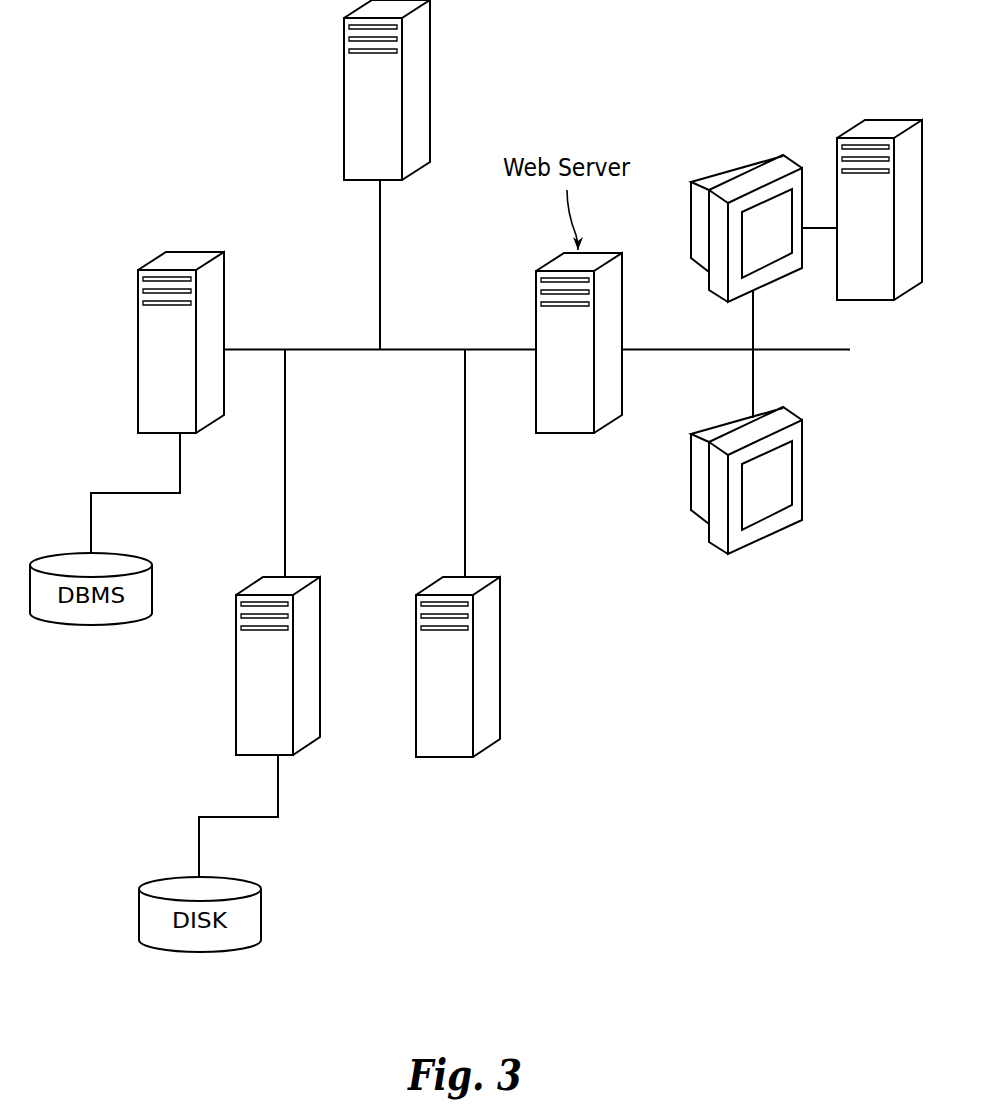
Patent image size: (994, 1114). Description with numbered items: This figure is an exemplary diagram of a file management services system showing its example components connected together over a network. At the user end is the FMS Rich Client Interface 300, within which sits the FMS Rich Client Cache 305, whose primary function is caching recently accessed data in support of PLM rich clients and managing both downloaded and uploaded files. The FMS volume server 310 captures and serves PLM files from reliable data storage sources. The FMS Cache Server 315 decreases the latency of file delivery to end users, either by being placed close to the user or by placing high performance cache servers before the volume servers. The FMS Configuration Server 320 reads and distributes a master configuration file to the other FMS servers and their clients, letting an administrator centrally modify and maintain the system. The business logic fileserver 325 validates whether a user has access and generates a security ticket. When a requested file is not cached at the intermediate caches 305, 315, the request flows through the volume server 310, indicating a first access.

The FMS Rich Client Interface 300 is at (735, 165).
The FMS Rich Client Cache 305 is at (880, 118).
The FMS volume server 310 is at (236, 673).
The FMS Cache Server 315 is at (502, 675).
The FMS Configuration Server 320 is at (343, 97).
The business logic fileserver 325 is at (182, 252).